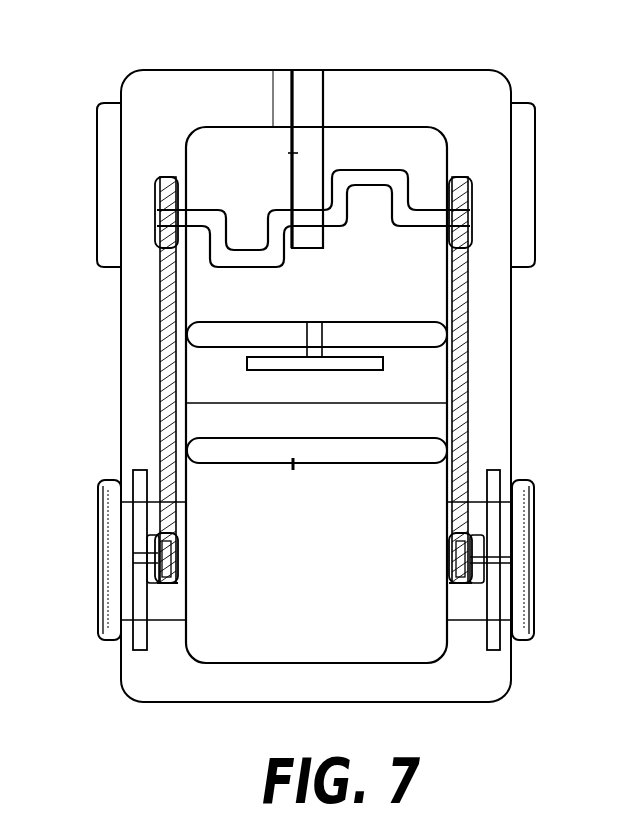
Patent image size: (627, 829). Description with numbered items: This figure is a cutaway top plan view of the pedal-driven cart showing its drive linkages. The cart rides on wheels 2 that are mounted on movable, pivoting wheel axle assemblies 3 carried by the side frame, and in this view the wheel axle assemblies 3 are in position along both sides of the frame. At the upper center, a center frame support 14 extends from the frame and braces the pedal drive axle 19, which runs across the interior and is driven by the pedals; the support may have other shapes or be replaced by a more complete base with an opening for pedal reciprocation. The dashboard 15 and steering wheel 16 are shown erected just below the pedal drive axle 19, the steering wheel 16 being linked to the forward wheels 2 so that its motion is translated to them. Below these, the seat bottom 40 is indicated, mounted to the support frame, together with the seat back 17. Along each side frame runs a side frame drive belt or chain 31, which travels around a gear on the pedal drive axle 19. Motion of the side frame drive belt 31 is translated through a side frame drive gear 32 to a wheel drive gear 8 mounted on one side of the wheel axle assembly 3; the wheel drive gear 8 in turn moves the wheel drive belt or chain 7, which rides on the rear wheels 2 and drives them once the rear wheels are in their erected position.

The wheels 2 is at (537, 578).
The wheel axle assemblies 3 is at (138, 470).
The wheel drive belt 7 is at (158, 536).
The wheel drive gear 8 is at (165, 584).
The center frame support 14 is at (292, 150).
The dashboard 15 is at (205, 336).
The steering wheel 16 is at (350, 372).
The seat back 17 is at (293, 470).
The pedal drive axle 19 is at (258, 236).
The side frame drive belt 31 is at (180, 291).
The side frame drive gear 32 is at (168, 556).
The seat bottom 40 is at (355, 433).